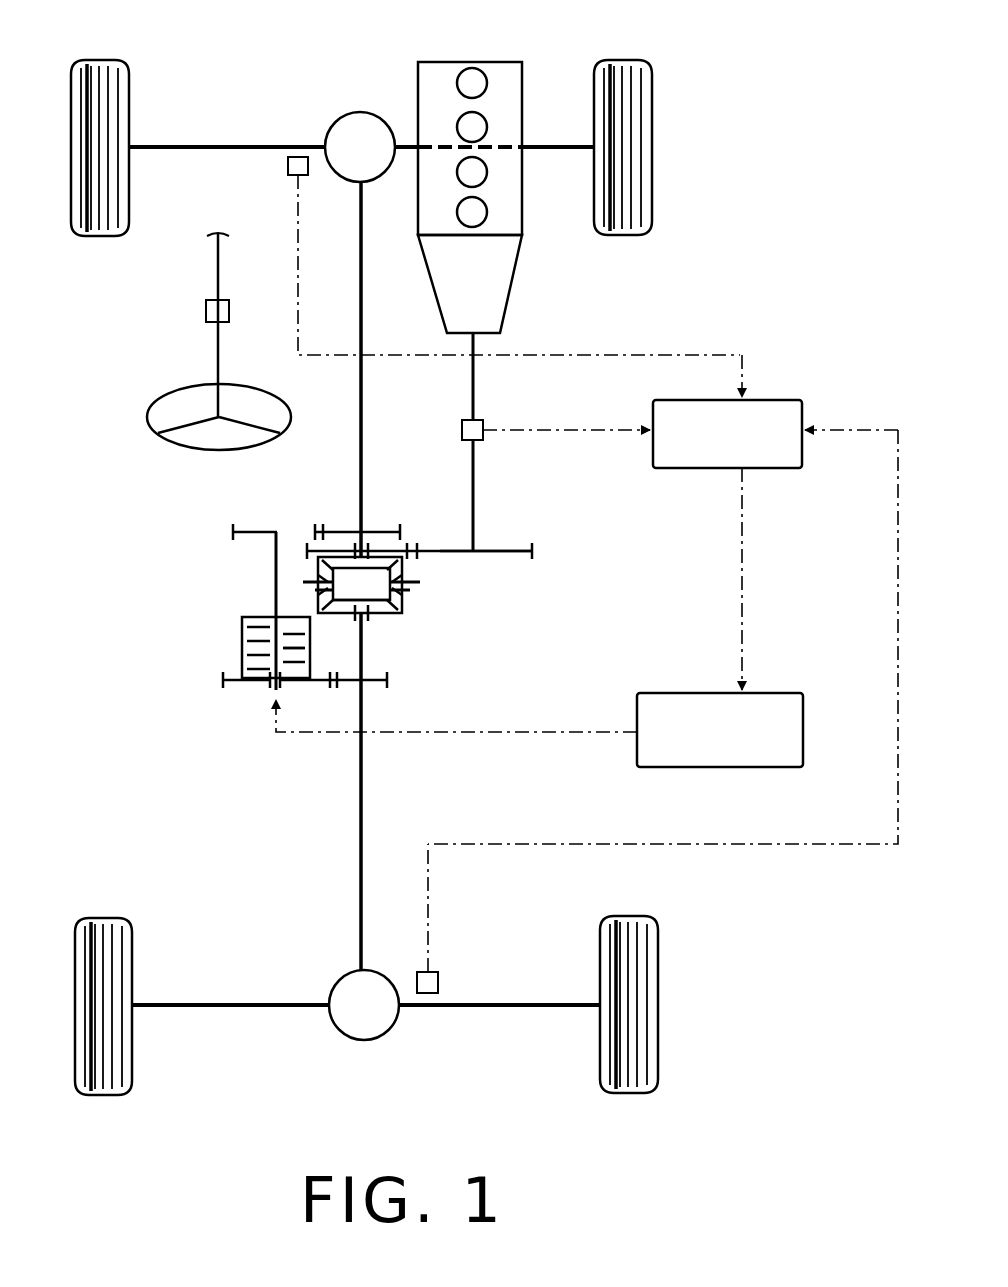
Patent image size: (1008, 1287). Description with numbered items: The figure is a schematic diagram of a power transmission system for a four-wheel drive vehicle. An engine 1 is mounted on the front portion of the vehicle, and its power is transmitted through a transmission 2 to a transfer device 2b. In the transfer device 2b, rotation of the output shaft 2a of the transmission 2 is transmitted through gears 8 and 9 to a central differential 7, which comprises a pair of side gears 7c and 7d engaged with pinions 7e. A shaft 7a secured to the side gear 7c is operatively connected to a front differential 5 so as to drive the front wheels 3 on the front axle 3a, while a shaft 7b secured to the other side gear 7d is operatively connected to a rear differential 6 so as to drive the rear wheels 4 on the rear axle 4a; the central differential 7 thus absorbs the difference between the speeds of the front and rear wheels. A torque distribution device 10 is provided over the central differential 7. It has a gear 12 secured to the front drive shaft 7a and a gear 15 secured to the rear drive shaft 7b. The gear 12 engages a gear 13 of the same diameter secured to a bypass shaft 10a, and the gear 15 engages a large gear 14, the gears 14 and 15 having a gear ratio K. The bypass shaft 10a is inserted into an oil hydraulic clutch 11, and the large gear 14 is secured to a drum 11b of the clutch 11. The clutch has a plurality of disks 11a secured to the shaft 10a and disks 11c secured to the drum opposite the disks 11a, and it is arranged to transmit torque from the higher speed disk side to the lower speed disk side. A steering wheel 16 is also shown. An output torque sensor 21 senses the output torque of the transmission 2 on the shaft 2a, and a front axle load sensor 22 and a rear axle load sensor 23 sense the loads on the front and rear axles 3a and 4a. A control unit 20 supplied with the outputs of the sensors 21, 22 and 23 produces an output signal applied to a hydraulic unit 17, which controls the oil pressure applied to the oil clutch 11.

The engine 1 is at (512, 62).
The transmission 2 is at (508, 312).
The output shaft 2a is at (476, 505).
The transfer device 2b is at (532, 526).
The front wheels 3 is at (128, 86).
The front axle 3a is at (222, 147).
The rear wheels 4 is at (132, 940).
The rear axle 4a is at (244, 1010).
The front differential 5 is at (346, 113).
The rear differential 6 is at (340, 1034).
The central differential 7 is at (402, 608).
The shaft 7a is at (361, 417).
The shaft 7b is at (360, 846).
The side gear 7c is at (372, 557).
The side gear 7d is at (378, 616).
The pinions 7e is at (330, 582).
The gear 8 is at (500, 555).
The gear 9 is at (412, 552).
The torque distribution device 10 is at (190, 598).
The bypass shaft 10a is at (274, 562).
The oil hydraulic clutch 11 is at (242, 656).
The disks 11a is at (258, 624).
The drum 11b is at (242, 640).
The disks 11c is at (290, 655).
The gear 12 is at (330, 530).
The gear 13 is at (256, 530).
The large gear 14 is at (234, 690).
The gear 15 is at (376, 690).
The steering wheel 16 is at (160, 402).
The hydraulic unit 17 is at (684, 693).
The control unit 20 is at (786, 400).
The output torque sensor 21 is at (483, 424).
The front axle load sensor 22 is at (288, 170).
The rear axle load sensor 23 is at (438, 982).